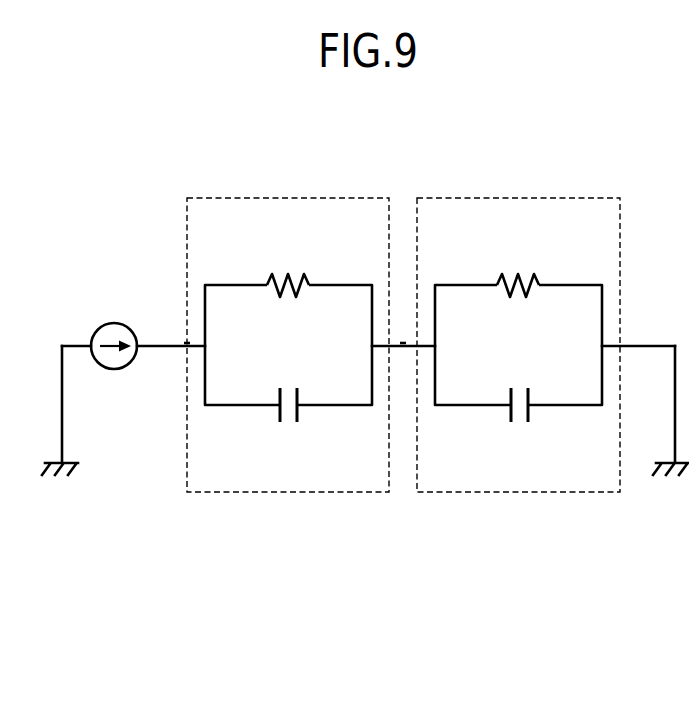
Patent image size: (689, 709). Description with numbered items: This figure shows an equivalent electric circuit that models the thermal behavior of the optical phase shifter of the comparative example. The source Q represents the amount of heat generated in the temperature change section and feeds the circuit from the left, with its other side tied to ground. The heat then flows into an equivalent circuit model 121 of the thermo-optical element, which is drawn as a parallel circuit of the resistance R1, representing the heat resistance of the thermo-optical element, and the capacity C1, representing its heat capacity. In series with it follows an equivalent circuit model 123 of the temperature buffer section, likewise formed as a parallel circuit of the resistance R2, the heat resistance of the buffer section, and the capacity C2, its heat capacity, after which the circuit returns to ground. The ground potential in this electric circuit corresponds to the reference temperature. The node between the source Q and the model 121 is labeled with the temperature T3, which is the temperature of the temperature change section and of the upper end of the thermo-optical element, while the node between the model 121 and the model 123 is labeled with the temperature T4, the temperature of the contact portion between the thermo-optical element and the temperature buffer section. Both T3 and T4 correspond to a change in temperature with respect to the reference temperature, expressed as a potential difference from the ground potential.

The equivalent circuit model of the thermo-optical element 121 is at (287, 197).
The equivalent circuit model of the temperature buffer section 123 is at (518, 197).
The heat resistance of the thermo-optical element R1 is at (288, 268).
The heat capacity of the thermo-optical element C1 is at (287, 424).
The heat resistance of the temperature buffer section R2 is at (518, 268).
The heat capacity of the temperature buffer section C2 is at (519, 424).
The amount of heat generated in the temperature change section Q is at (114, 327).
The temperature of the temperature change section and upper end of the thermo-optica T3 is at (187, 347).
The temperature of the contact portion between the thermo-optical element and the te T4 is at (403, 347).